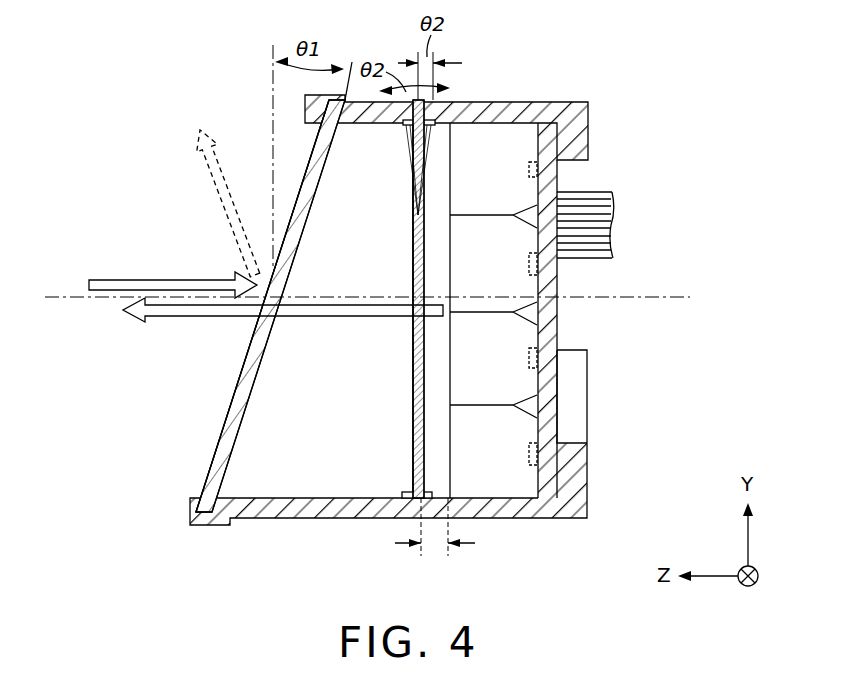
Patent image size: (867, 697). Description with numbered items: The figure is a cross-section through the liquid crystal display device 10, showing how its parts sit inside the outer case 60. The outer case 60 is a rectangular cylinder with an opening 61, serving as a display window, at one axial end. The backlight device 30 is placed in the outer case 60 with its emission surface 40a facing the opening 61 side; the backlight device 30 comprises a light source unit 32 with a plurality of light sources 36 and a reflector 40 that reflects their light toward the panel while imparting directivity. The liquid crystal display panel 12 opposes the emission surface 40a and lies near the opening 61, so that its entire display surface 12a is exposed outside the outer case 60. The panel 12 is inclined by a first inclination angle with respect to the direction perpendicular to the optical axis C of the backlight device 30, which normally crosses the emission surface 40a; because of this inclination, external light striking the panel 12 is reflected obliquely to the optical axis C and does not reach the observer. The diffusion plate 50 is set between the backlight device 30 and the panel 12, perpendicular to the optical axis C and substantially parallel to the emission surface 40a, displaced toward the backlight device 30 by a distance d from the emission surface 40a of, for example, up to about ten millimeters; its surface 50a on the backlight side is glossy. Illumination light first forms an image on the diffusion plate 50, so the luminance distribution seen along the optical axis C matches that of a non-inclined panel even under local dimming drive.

The liquid crystal display device 10 is at (379, 322).
The liquid crystal display panel 12 is at (244, 306).
The display surface 12a is at (238, 373).
The backlight device 30 is at (488, 146).
The light source unit 32 is at (560, 314).
The light sources 36 is at (540, 170).
The reflector 40 is at (515, 425).
The emission surface 40a is at (450, 173).
The diffusion plate 50 is at (392, 275).
The surface 50a is at (420, 380).
The outer case 60 is at (313, 514).
The opening 61 is at (200, 495).
The optical axis C is at (63, 300).
The distance d is at (435, 537).